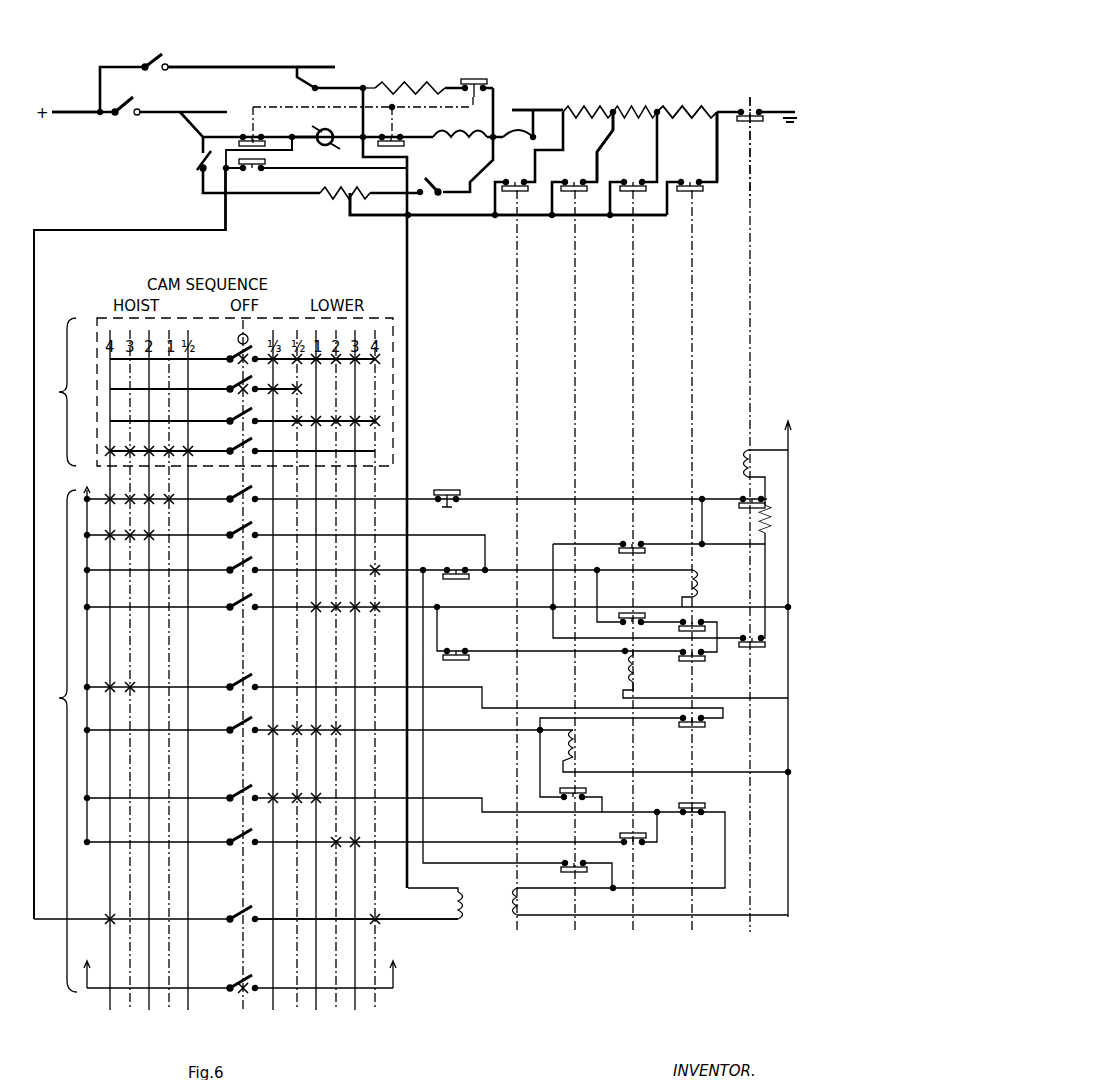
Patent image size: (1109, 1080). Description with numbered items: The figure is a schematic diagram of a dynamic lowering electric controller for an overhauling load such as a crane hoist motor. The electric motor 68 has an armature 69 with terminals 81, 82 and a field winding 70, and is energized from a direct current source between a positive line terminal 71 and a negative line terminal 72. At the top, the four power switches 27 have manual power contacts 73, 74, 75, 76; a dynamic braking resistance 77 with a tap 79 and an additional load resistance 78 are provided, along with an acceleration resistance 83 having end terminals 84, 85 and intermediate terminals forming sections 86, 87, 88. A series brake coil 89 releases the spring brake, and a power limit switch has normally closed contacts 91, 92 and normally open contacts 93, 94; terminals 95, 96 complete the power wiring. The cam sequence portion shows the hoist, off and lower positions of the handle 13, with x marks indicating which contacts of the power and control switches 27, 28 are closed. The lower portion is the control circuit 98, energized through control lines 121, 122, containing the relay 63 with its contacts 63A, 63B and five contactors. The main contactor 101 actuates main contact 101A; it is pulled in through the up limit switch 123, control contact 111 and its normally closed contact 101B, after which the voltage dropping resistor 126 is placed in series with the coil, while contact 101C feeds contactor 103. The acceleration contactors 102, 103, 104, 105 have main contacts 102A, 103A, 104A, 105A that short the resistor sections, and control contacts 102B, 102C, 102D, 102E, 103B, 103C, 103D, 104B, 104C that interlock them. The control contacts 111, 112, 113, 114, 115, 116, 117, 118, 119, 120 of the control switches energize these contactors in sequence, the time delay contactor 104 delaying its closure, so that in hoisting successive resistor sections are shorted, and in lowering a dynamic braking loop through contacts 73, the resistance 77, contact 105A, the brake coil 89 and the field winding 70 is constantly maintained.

The handle 13 is at (250, 334).
The power switches 27 is at (213, 392).
The control switches 28 is at (55, 741).
The relay 63 is at (464, 912).
The relay contact 63A is at (464, 580).
The relay contact 63B is at (463, 648).
The electric motor 68 is at (333, 131).
The armature 69 is at (314, 131).
The field winding 70 is at (448, 134).
The positive line terminal 71 is at (99, 114).
The negative line terminal 72 is at (761, 108).
The manual power contact 73 is at (199, 163).
The manual power contact 74 is at (437, 189).
The manual power contact 75 is at (158, 58).
The manual power contact 76 is at (132, 96).
The dynamic braking resistance 77 is at (337, 192).
The additional load resistance 78 is at (398, 80).
The tap 79 is at (346, 208).
The armature terminal 81 is at (362, 145).
The armature terminal 82 is at (293, 143).
The acceleration resistance 83 is at (583, 108).
The resistance terminal 84 is at (717, 108).
The resistance terminal 85 is at (562, 108).
The resistor section 86 is at (599, 120).
The resistor section 87 is at (655, 108).
The resistor section 88 is at (700, 108).
The series brake coil 89 is at (508, 128).
The limit switch contact 91 is at (238, 142).
The limit switch contact 92 is at (394, 131).
The limit switch contact 93 is at (256, 171).
The limit switch contact 94 is at (479, 78).
The conductor 95 is at (268, 67).
The contact 96 is at (316, 83).
The control circuit 98 is at (647, 538).
The main contactor 101 is at (746, 463).
The main contact 101A is at (755, 130).
The normally closed contact 101B is at (742, 496).
The control contact 101C is at (754, 647).
The acceleration contactor 102 is at (697, 584).
The contact 102A is at (696, 194).
The control contact 102B is at (686, 626).
The control contact 102C is at (693, 660).
The control contact 102D is at (694, 730).
The control contact 102E is at (692, 806).
The acceleration contactor 103 is at (638, 673).
The contact 103A is at (640, 180).
The control contact 103B is at (641, 550).
The control contact 103C is at (630, 614).
The control contact 103D is at (628, 836).
The time delay contactor 104 is at (580, 748).
The contact 104A is at (574, 172).
The control contact 104B is at (584, 794).
The control contact 104C is at (582, 870).
The acceleration contactor 105 is at (521, 905).
The contact 105A is at (518, 196).
The control contact 111 is at (236, 495).
The control contact 112 is at (237, 531).
The control contact 113 is at (237, 566).
The control contact 114 is at (237, 603).
The control contact 115 is at (237, 683).
The control contact 116 is at (237, 726).
The control contact 117 is at (237, 794).
The control contact 118 is at (237, 838).
The control contact 119 is at (238, 915).
The control contact 120 is at (238, 985).
The control line 121 is at (86, 520).
The control line 122 is at (786, 420).
The up limit switch 123 is at (453, 490).
The voltage dropping resistor 126 is at (762, 518).